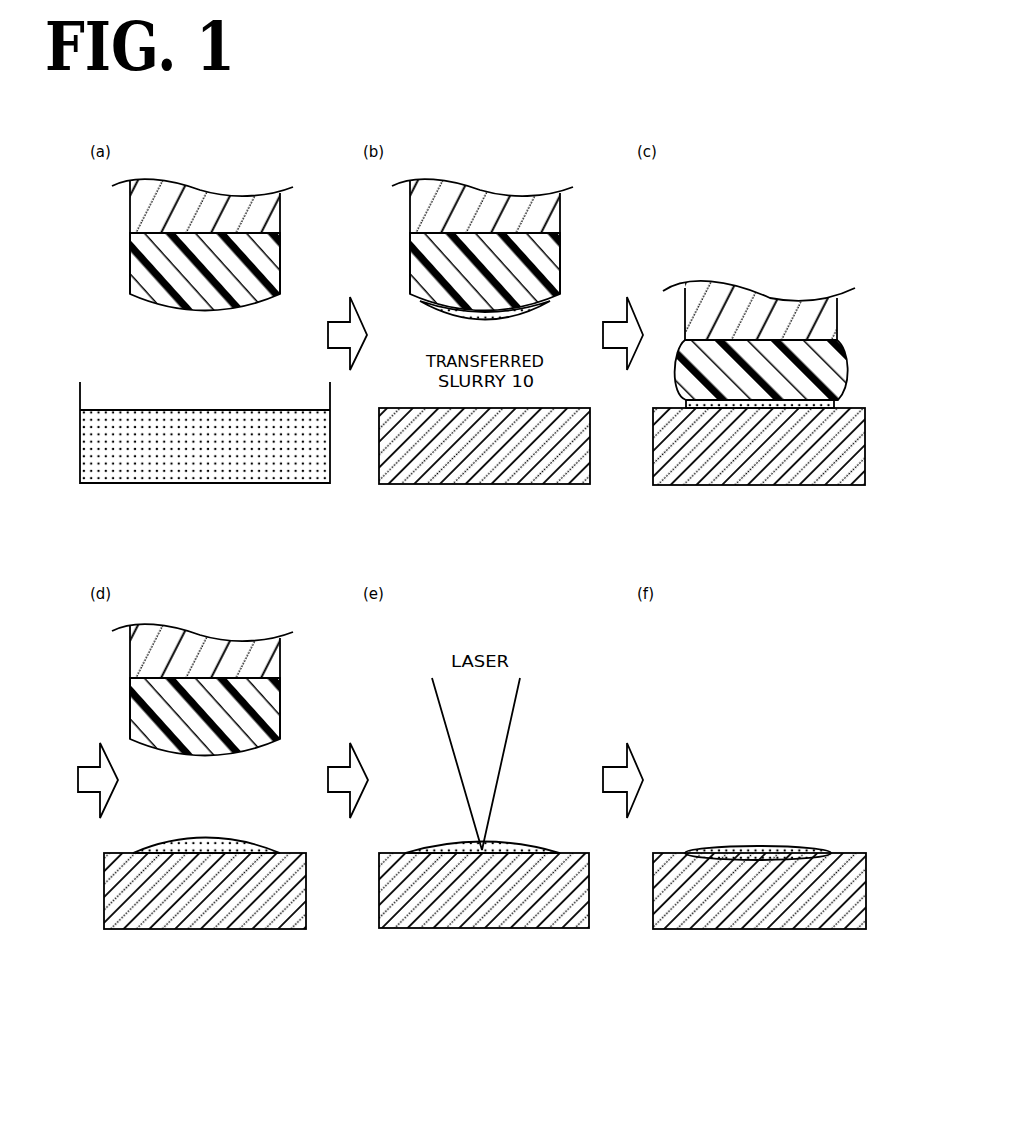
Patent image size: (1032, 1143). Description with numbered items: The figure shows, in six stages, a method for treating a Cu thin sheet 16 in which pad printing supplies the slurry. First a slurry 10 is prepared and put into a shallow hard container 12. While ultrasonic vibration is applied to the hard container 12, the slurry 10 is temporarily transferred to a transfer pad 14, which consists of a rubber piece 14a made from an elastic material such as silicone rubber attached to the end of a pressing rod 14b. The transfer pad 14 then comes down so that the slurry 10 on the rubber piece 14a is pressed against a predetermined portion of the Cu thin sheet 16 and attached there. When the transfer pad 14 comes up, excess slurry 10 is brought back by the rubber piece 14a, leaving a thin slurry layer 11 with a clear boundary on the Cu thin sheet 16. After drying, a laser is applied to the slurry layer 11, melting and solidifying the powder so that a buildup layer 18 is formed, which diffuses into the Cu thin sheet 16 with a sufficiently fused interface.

The slurry 10 is at (202, 418).
The slurry layer 11 is at (228, 845).
The hard container 12 is at (180, 485).
The transfer pad 14 is at (476, 581).
The rubber piece 14a is at (145, 283).
The pressing rod 14b is at (143, 206).
The Cu thin sheet 16 is at (520, 470).
The buildup layer 18 is at (770, 850).